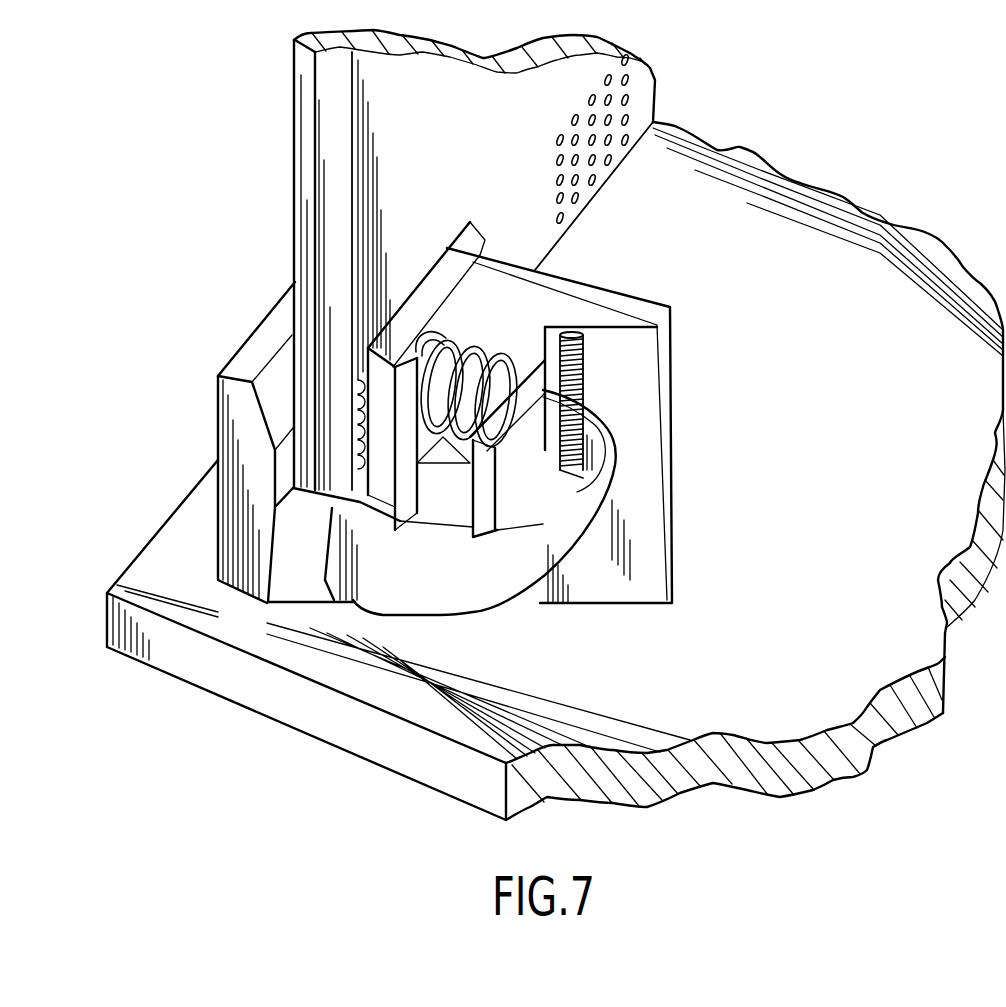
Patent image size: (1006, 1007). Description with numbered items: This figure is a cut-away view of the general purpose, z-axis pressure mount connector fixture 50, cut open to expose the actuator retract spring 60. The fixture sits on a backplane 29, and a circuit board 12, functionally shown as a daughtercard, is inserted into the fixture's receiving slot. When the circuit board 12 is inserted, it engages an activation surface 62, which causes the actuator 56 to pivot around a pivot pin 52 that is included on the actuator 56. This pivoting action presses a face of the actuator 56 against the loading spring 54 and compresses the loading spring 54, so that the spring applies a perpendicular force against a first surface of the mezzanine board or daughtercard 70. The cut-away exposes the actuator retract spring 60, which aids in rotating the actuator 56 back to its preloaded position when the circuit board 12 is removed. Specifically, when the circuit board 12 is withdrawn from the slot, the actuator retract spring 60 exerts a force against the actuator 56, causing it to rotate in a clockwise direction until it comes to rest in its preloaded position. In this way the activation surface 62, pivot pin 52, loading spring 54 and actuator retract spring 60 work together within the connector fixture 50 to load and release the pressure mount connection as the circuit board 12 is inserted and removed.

The circuit board 12 is at (333, 172).
The backplane 29 is at (145, 582).
The connector fixture 50 is at (255, 487).
The pivot pin 52 is at (400, 520).
The loading spring 54 is at (438, 410).
The actuator 56 is at (480, 590).
The actuator retract spring 60 is at (575, 396).
The activation surface 62 is at (330, 498).
The mezzanine board or daughtercard 70 is at (395, 335).